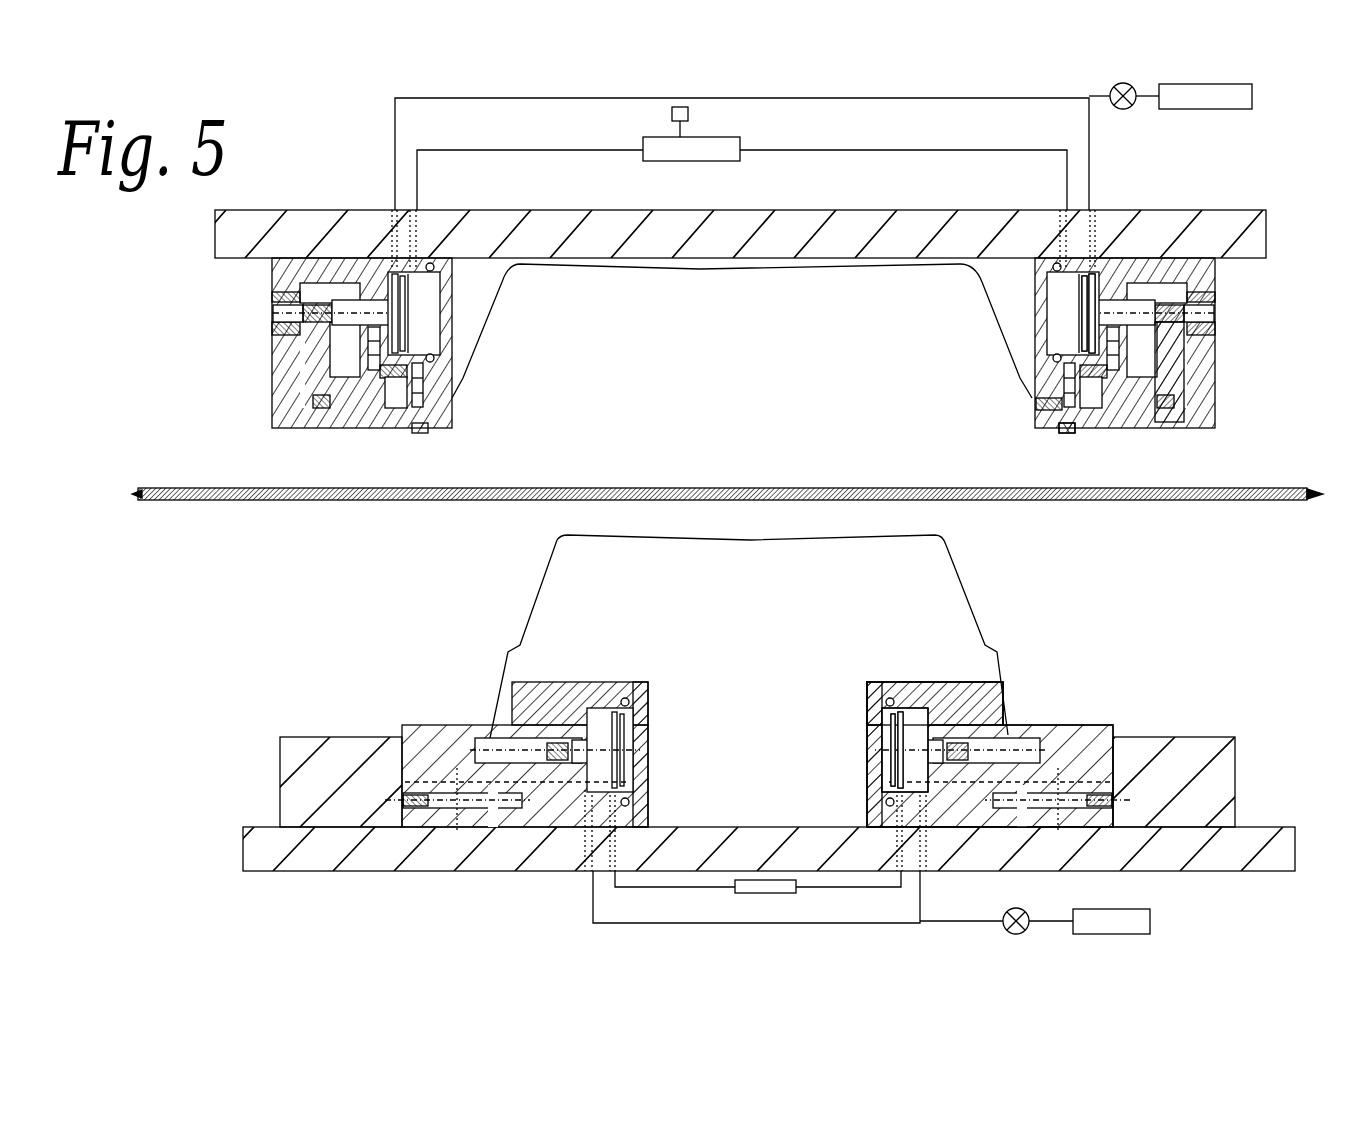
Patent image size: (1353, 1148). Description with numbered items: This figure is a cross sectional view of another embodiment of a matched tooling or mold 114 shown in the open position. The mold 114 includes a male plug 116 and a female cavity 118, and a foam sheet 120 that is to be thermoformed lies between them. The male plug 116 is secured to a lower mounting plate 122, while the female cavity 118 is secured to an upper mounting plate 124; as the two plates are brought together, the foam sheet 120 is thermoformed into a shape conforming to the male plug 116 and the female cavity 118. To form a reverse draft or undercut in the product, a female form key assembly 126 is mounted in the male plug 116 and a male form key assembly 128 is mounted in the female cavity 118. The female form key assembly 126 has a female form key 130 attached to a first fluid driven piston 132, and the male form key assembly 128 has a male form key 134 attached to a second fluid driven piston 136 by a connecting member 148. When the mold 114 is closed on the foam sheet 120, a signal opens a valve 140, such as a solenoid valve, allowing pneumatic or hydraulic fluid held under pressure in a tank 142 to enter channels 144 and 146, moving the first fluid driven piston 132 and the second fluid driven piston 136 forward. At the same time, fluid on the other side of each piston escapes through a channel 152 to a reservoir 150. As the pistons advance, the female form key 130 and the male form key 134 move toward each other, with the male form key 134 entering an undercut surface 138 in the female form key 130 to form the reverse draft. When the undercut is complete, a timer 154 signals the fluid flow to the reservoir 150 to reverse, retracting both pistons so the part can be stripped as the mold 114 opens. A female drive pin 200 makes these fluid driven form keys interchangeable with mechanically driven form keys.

The mold 114 is at (983, 152).
The male plug 116 is at (297, 700).
The female cavity 118 is at (318, 172).
The foam sheet 120 is at (1113, 490).
The lower mounting plate 122 is at (375, 873).
The upper mounting plate 124 is at (1190, 209).
The female form key assembly 126 is at (1130, 710).
The male form key assembly 128 is at (1256, 418).
The female form key 130 is at (980, 676).
The first fluid driven piston 132 is at (885, 727).
The male form key 134 is at (1034, 405).
The second fluid driven piston 136 is at (1080, 306).
The undercut surface 138 is at (1000, 700).
The valve 140 is at (1123, 110).
The tank 142 is at (1252, 96).
The channel 144 is at (583, 872).
The channel 146 is at (396, 214).
The connecting member 148 is at (1178, 343).
The reservoir 150 is at (742, 138).
The channel 152 is at (421, 214).
The timer 154 is at (672, 114).
The female drive pin 200 is at (1062, 436).